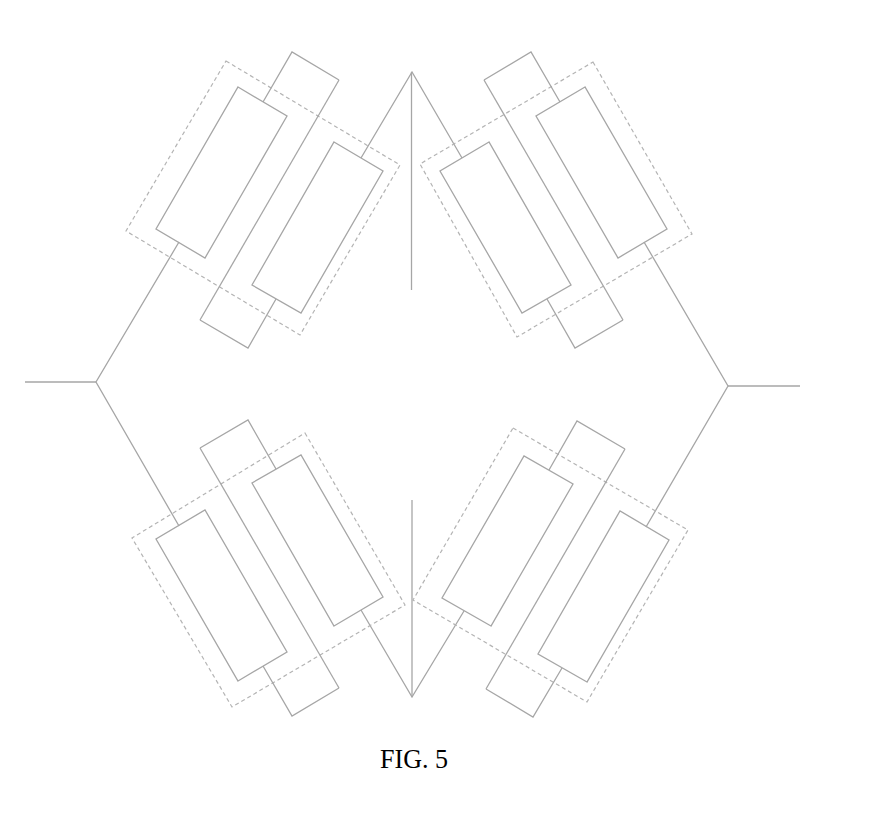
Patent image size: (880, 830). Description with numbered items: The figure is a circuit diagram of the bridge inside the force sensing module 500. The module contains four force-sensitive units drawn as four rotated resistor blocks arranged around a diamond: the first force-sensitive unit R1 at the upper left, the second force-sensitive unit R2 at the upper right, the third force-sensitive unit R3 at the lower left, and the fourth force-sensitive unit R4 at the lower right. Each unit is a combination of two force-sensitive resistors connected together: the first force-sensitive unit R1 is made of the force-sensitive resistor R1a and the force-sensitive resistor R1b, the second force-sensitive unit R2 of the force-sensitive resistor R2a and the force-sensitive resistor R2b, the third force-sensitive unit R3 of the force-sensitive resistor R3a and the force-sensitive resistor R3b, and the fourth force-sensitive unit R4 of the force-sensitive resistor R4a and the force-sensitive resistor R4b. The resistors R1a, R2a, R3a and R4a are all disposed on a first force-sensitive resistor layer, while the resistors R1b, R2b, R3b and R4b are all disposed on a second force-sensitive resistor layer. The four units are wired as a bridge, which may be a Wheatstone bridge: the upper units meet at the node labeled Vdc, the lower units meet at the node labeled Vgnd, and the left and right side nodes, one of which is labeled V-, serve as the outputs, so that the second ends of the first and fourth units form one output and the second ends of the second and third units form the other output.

The force sensing module 500 is at (157, 57).
The first force-sensitive unit R1 is at (261, 200).
The force-sensitive resistor R1a is at (221, 172).
The force-sensitive resistor R1b is at (317, 227).
The second force-sensitive unit R2 is at (556, 200).
The force-sensitive resistor R2a is at (601, 172).
The force-sensitive resistor R2b is at (505, 227).
The third force-sensitive unit R3 is at (263, 568).
The force-sensitive resistor R3a is at (221, 595).
The force-sensitive resistor R3b is at (317, 540).
The fourth force-sensitive unit R4 is at (553, 569).
The force-sensitive resistor R4a is at (603, 596).
The force-sensitive resistor R4b is at (507, 541).
The negative output terminal V- is at (722, 384).
The supply voltage terminal Vdc is at (411, 206).
The ground terminal Vgnd is at (412, 572).